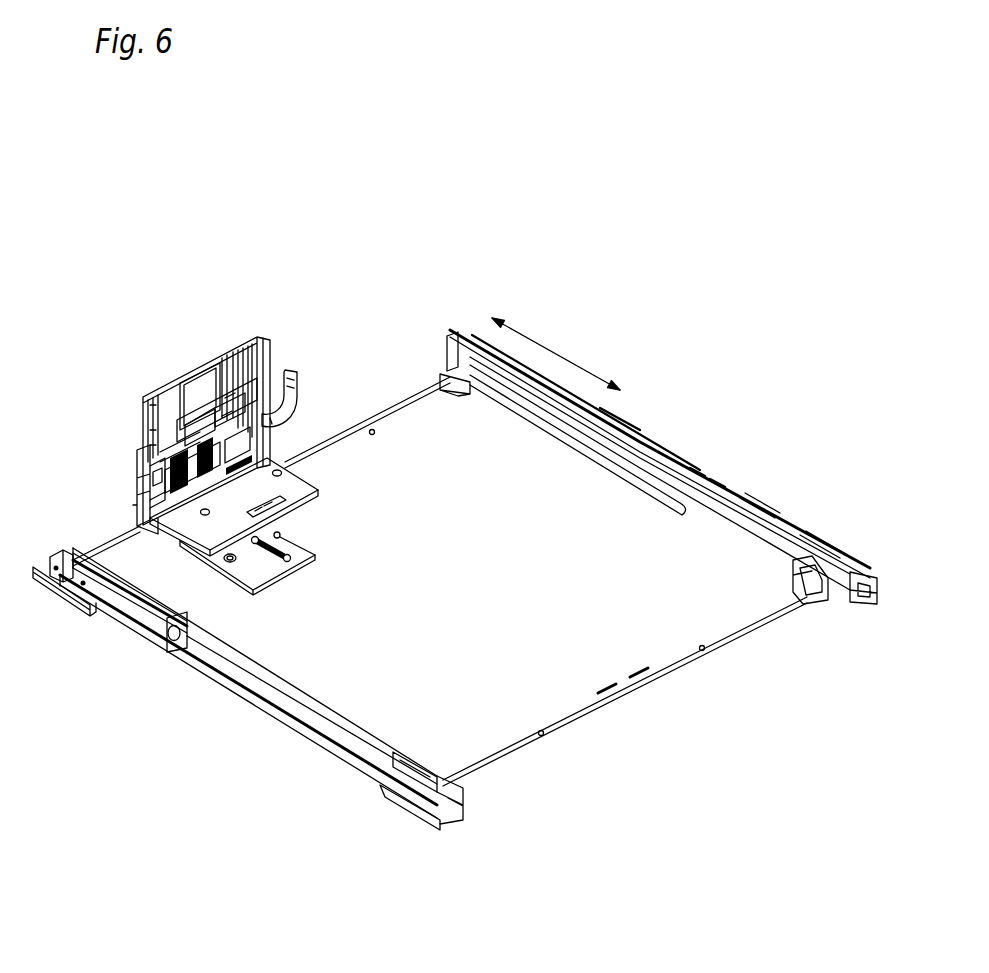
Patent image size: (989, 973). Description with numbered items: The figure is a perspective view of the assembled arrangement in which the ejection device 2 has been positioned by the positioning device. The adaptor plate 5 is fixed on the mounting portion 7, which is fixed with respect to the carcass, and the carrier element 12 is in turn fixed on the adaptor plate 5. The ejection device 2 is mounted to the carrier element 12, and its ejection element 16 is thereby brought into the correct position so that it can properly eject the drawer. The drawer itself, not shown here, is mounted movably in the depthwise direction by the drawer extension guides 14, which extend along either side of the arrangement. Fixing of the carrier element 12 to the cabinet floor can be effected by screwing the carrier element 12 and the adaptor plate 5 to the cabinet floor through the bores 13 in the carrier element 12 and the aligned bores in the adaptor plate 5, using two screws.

The ejection device 2 is at (132, 470).
The adaptor plate 5 is at (260, 565).
The mounting portion 7 is at (373, 428).
The carrier element 12 is at (203, 387).
The bores 13 is at (228, 528).
The drawer extension guides 14 is at (712, 468).
The ejection element 16 is at (293, 372).